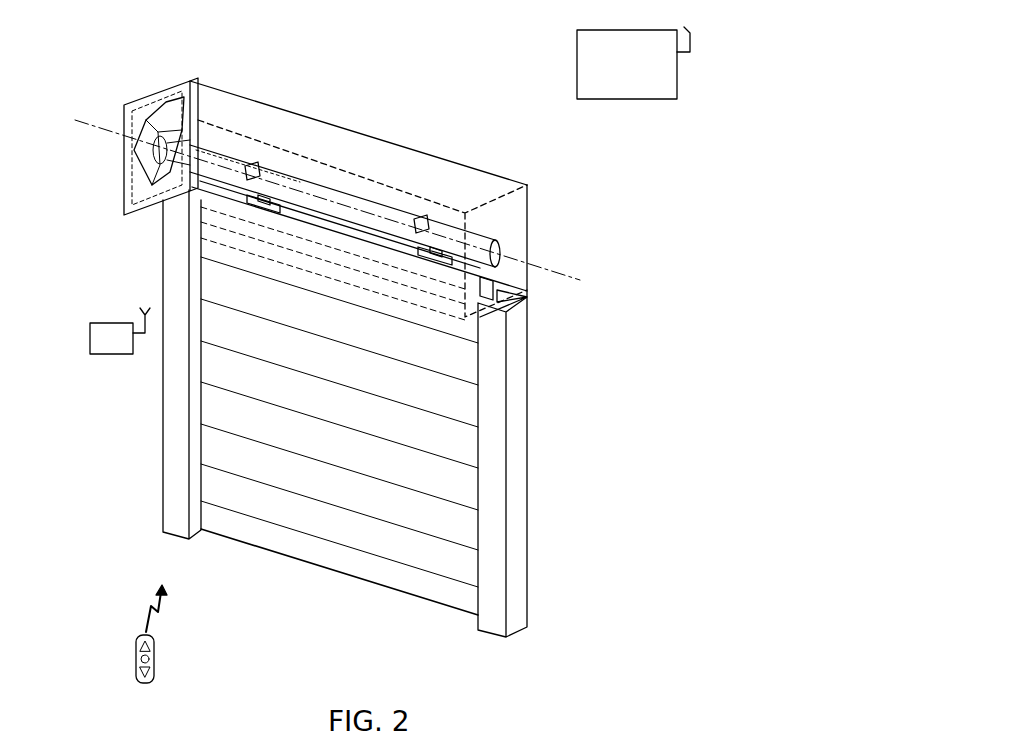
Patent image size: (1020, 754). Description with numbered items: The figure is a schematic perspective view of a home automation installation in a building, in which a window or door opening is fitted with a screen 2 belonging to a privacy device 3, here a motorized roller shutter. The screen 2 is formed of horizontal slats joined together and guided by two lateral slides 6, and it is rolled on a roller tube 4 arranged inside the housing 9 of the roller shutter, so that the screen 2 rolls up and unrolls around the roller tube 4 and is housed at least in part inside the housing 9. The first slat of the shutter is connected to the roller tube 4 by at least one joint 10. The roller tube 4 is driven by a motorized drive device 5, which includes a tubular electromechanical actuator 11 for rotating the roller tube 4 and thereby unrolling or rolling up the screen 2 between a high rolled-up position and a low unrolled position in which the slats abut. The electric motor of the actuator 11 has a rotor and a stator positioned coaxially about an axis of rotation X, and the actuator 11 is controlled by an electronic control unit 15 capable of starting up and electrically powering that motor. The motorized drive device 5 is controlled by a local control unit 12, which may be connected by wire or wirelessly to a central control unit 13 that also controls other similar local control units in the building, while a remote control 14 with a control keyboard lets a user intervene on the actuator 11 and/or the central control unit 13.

The screen 2 is at (352, 545).
The privacy device 3 is at (136, 440).
The roller tube 4 is at (312, 190).
The motorized drive device 5 is at (229, 136).
The lateral slides 6 is at (177, 513).
The housing 9 is at (453, 177).
The joint 10 is at (255, 162).
The electromechanical actuator 11 is at (142, 187).
The local control unit 12 is at (108, 333).
The central control unit 13 is at (578, 60).
The remote control 14 is at (156, 660).
The electronic control unit 15 is at (188, 152).
The axis of rotation X is at (552, 273).